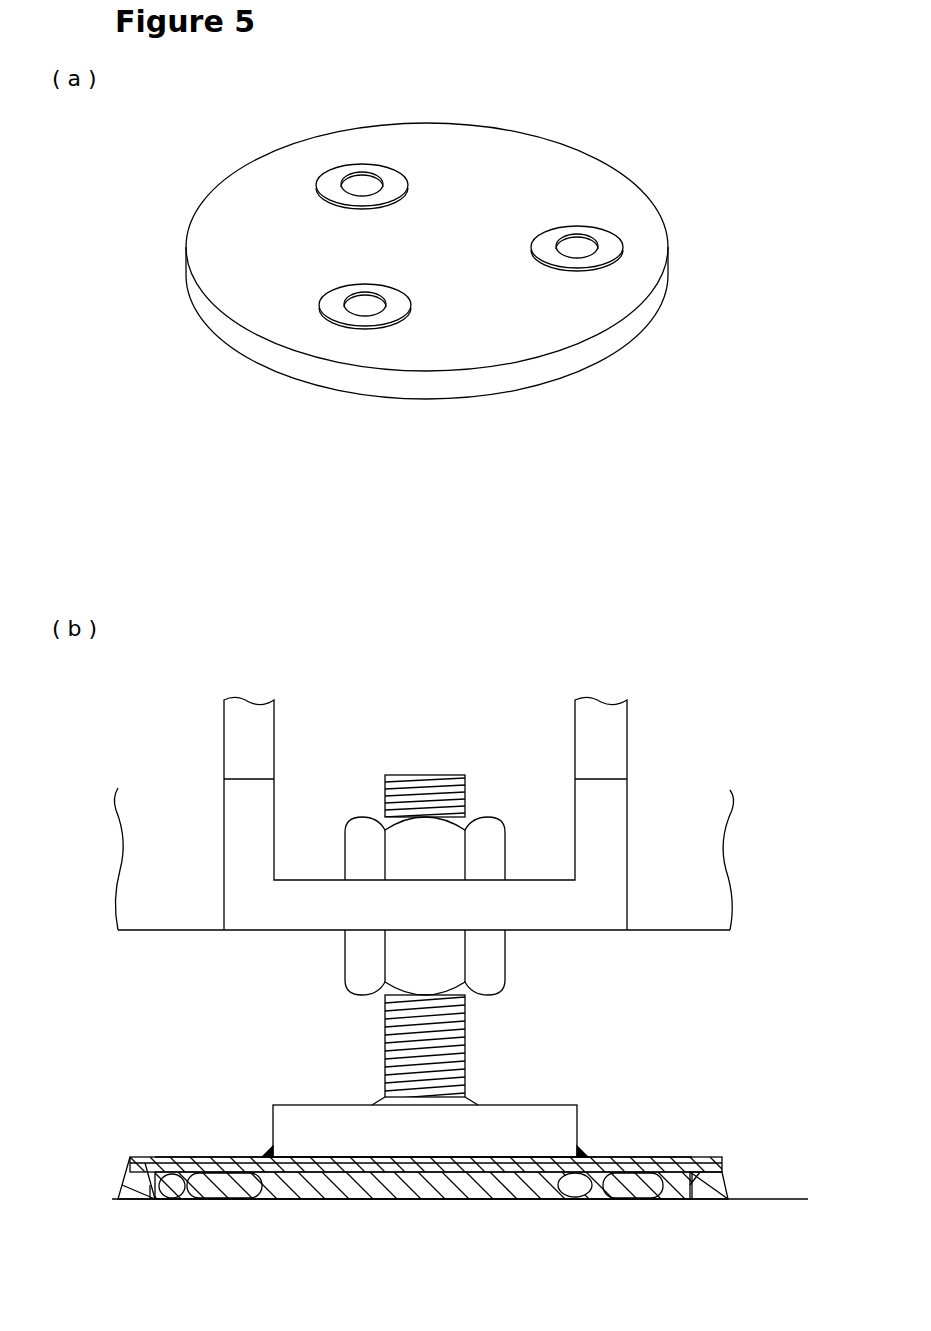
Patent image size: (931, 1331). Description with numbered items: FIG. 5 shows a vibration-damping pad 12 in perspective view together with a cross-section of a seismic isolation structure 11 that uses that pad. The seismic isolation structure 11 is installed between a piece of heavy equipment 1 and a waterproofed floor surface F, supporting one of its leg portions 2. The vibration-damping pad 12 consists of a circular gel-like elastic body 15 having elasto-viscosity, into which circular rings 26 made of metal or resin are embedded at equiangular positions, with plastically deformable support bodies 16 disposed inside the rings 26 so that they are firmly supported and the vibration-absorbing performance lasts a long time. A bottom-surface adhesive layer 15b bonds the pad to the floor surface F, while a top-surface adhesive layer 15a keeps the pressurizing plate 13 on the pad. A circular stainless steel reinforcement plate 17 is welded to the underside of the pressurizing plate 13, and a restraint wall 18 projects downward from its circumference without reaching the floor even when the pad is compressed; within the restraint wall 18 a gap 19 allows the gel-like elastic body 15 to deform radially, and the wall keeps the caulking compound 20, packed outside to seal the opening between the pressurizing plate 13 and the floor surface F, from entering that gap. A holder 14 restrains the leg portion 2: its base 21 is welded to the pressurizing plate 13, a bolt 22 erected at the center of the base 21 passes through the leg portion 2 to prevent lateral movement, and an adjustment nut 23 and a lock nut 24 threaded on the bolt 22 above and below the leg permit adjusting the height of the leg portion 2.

The equipment 1 is at (168, 934).
The leg portion 2 is at (224, 750).
The seismic isolation structure 11 is at (657, 1032).
The vibration-damping pad 12 is at (185, 262).
The pressurizing plate 13 is at (700, 1171).
The holder 14 is at (385, 1030).
The gel-like elastic body 15 is at (480, 152).
The top-surface adhesive layer 15a is at (245, 1185).
The bottom-surface adhesive layer 15b is at (264, 1200).
The support body 16 is at (365, 175).
The reinforcement plate 17 is at (628, 1163).
The restraint wall 18 is at (150, 1200).
The gap 19 is at (172, 1200).
The caulking compound 20 is at (118, 1192).
The base 21 is at (548, 1105).
The bolt 22 is at (425, 775).
The adjustment nut 23 is at (352, 962).
The lock nut 24 is at (500, 820).
The circular ring 26 is at (332, 182).
The floor surface F is at (780, 1199).